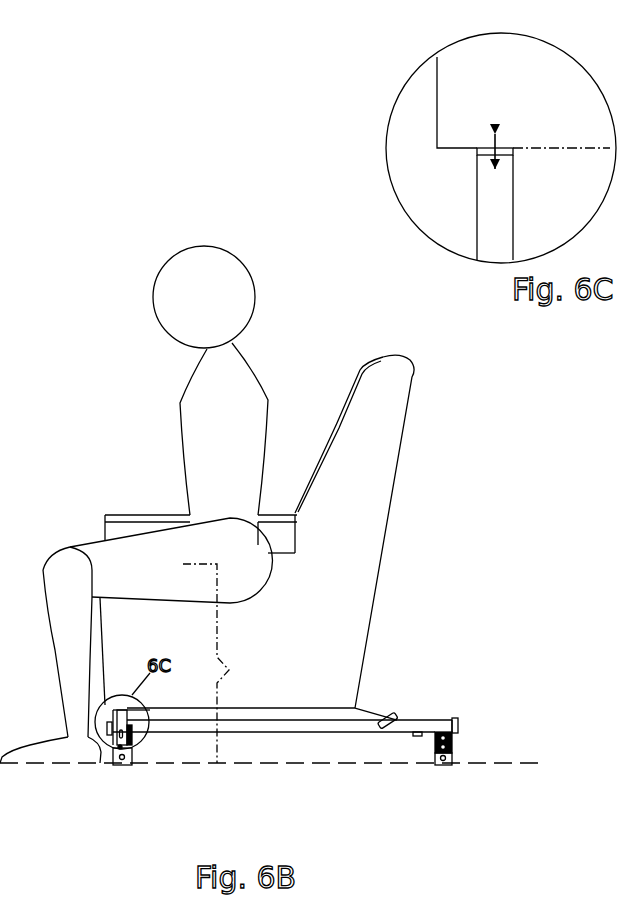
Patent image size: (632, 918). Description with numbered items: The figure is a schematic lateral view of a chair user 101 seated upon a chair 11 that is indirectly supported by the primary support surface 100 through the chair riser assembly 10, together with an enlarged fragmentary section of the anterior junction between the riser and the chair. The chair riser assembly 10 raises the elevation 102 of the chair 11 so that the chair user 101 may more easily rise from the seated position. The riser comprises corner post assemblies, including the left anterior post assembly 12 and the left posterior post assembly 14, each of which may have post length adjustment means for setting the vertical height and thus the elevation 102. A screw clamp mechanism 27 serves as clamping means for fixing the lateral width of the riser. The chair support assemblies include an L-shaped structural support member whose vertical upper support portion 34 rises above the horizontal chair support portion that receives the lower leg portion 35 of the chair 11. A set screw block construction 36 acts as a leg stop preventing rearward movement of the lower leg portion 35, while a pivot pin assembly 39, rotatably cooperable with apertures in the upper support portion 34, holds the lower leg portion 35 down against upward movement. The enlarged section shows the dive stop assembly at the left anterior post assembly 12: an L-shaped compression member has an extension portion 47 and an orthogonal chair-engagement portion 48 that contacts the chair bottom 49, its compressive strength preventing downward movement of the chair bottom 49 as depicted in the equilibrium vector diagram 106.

In FIG. 6B, the chair riser assembly 10 is at (438, 709).
In FIG. 6B, the chair 11 is at (407, 357).
In FIG. 6B, the left anterior post assembly 12 is at (113, 780).
In FIG. 6B, the left posterior post assembly 14 is at (438, 770).
In FIG. 6B, the screw clamp mechanism 27 is at (463, 719).
In FIG. 6B, the upper support portion 34 is at (272, 725).
In FIG. 6B, the lower leg portion 35 is at (368, 711).
In FIG. 6B, the set screw block construction 36 is at (412, 737).
In FIG. 6B, the pivot pin assembly 39 is at (399, 714).
In FIG. 6C, the extension portion 47 is at (488, 193).
In FIG. 6C, the chair-engagement portion 48 is at (512, 155).
In FIG. 6B, the chair bottom 49 is at (158, 699).
In FIG. 6C, the chair bottom 49 is at (460, 123).
In FIG. 6B, the primary support surface 100 is at (492, 762).
In FIG. 6B, the chair user 101 is at (255, 283).
In FIG. 6B, the elevation 102 is at (227, 663).
In FIG. 6C, the equilibrium vector diagram 106 is at (500, 148).